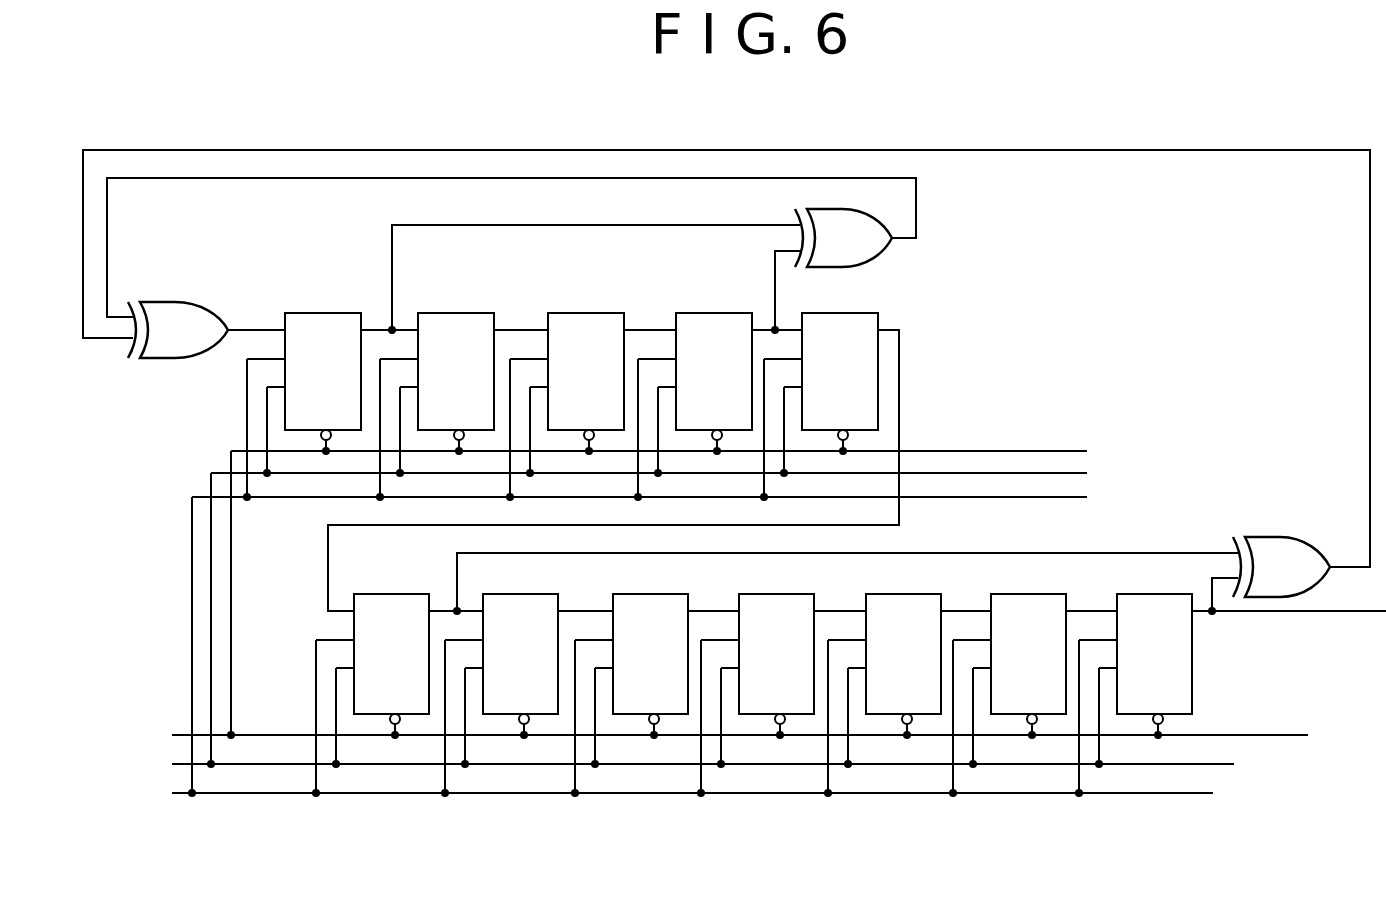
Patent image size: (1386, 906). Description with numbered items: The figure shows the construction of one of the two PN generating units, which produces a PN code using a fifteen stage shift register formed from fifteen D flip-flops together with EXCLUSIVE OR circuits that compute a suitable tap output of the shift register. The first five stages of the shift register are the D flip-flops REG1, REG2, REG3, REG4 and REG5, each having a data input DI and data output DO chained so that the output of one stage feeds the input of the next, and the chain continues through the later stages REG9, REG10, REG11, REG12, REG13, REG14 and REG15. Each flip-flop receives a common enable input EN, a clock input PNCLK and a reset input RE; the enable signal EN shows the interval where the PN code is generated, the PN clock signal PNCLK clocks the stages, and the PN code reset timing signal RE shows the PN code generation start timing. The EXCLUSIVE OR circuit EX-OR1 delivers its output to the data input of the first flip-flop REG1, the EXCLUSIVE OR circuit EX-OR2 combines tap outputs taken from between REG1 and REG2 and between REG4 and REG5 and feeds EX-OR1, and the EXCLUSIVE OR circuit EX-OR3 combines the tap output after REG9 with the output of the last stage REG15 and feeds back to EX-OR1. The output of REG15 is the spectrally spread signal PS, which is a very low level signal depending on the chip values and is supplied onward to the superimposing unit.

The D flip-flop REG1 is at (330, 391).
The D flip-flop REG2 is at (462, 391).
The D flip-flop REG3 is at (591, 391).
The D flip-flop REG4 is at (718, 391).
The D flip-flop REG5 is at (613, 446).
The D flip-flop REG9 is at (397, 680).
The D flip-flop REG10 is at (527, 680).
The D flip-flop REG11 is at (655, 680).
The D flip-flop REG12 is at (781, 680).
The D flip-flop REG13 is at (907, 680).
The D flip-flop REG14 is at (1033, 680).
The D flip-flop REG15 is at (1136, 680).
The EXCLUSIVE OR circuit EX-OR1 is at (186, 300).
The EXCLUSIVE OR circuit EX-OR2 is at (888, 246).
The EXCLUSIVE OR circuit EX-OR3 is at (1276, 536).
The spectrally spread signal PS is at (1289, 595).
The PN code reset timing signal RE is at (720, 600).
The PN clock signal PNCLK is at (658, 625).
The PN generation enable signal EN is at (672, 652).